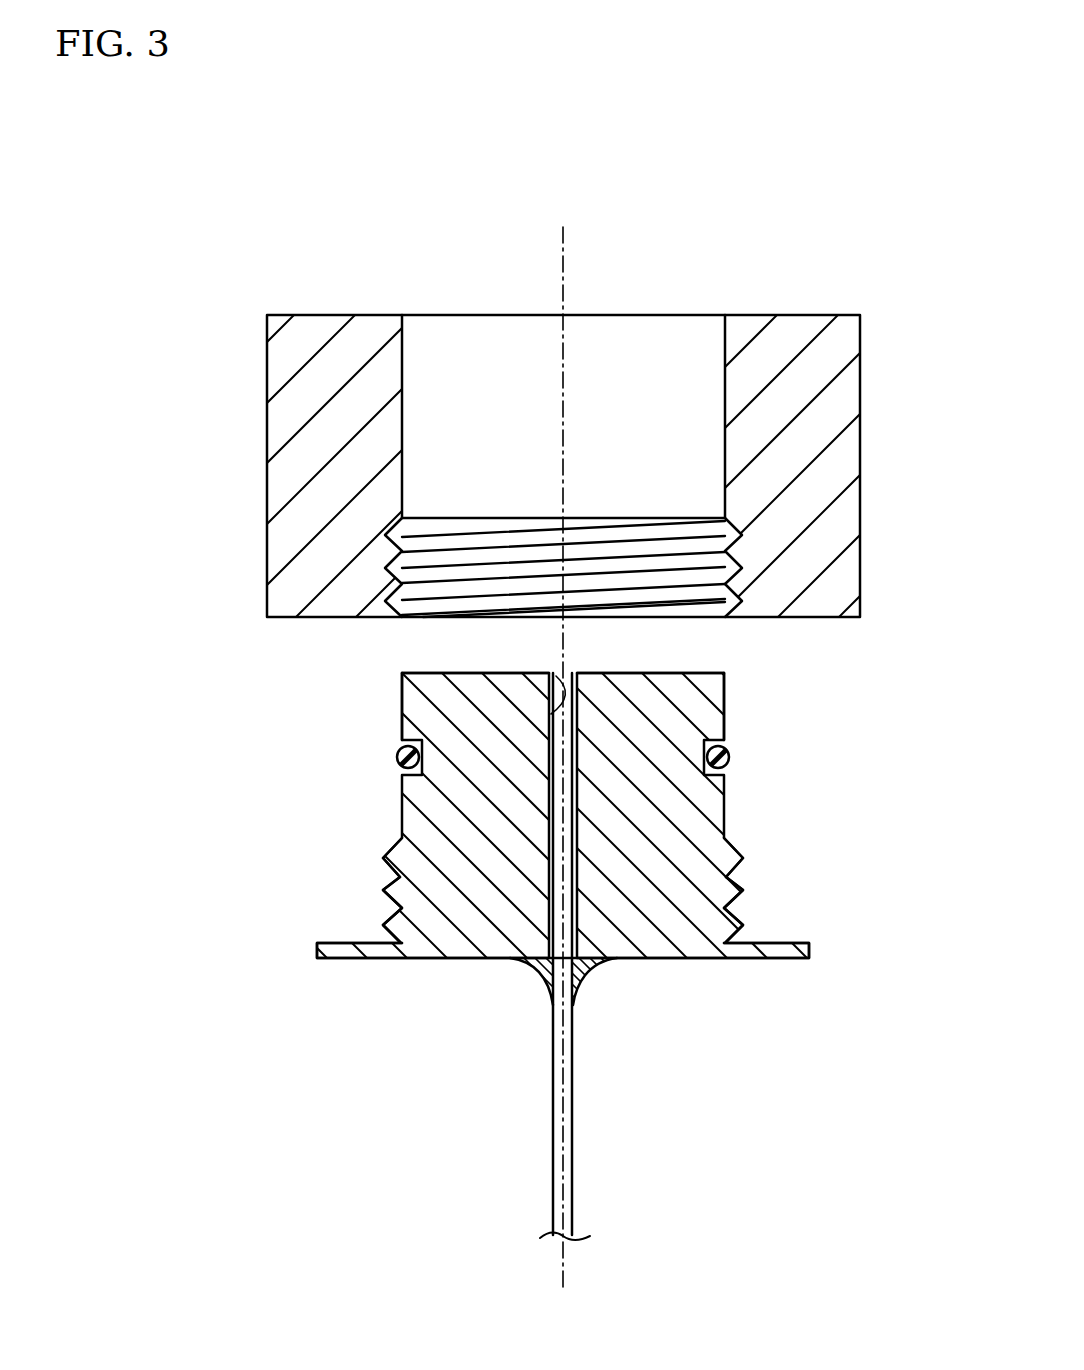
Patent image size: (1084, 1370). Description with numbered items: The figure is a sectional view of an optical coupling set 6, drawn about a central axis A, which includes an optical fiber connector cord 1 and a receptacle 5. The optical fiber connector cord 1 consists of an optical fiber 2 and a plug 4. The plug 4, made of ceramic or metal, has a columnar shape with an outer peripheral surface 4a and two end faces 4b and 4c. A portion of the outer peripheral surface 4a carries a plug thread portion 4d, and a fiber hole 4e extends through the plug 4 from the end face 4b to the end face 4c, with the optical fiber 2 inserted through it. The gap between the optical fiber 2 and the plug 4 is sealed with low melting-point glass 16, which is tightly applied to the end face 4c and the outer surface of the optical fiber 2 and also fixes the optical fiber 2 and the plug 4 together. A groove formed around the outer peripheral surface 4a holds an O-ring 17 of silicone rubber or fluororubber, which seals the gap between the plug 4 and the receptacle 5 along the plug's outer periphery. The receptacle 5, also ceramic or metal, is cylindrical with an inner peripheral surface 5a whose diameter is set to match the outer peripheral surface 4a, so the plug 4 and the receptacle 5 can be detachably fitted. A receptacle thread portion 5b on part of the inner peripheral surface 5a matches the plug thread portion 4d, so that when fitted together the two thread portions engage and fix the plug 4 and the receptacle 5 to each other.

The optical fiber connector cord 1 is at (542, 685).
The optical fiber 2 is at (573, 1065).
The plug 4 is at (542, 685).
The outer peripheral surface 4a is at (410, 703).
The end face 4b is at (648, 673).
The end face 4c is at (430, 960).
The plug thread portion 4d is at (380, 838).
The fiber hole 4e is at (554, 674).
The receptacle 5 is at (542, 685).
The inner peripheral surface 5a is at (724, 357).
The receptacle thread portion 5b is at (465, 533).
The optical coupling set 6 is at (542, 685).
The low melting-point glass 16 is at (550, 962).
The O-ring 17 is at (396, 761).
The central axis A is at (562, 253).